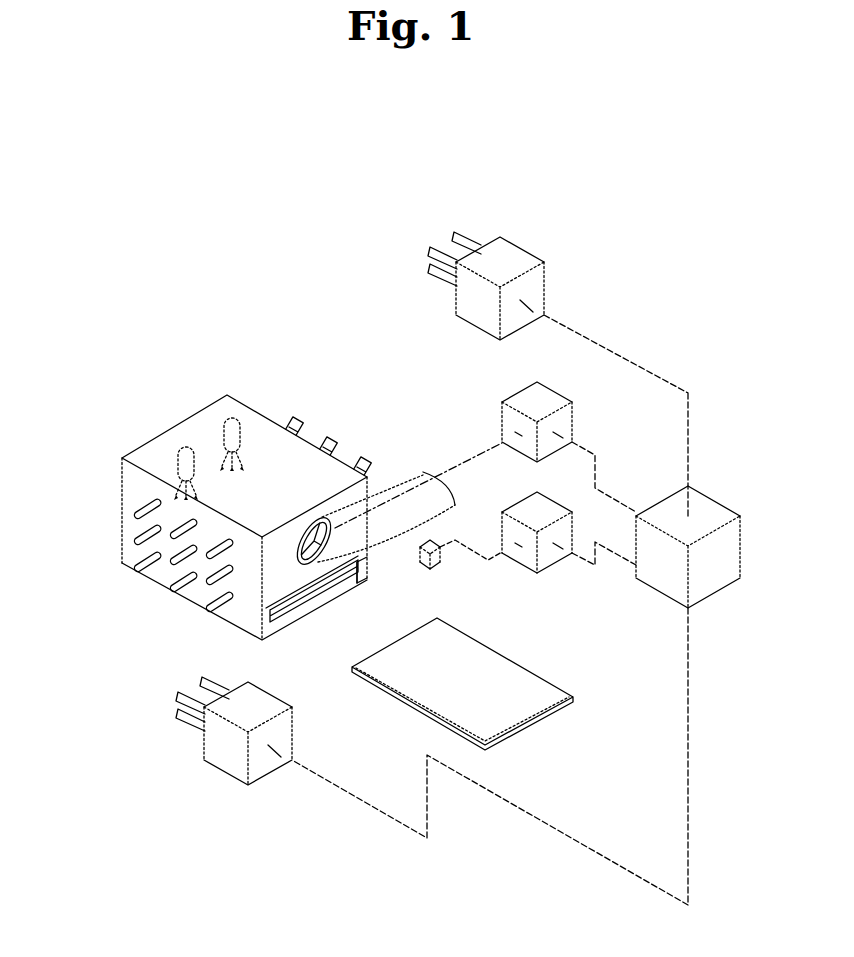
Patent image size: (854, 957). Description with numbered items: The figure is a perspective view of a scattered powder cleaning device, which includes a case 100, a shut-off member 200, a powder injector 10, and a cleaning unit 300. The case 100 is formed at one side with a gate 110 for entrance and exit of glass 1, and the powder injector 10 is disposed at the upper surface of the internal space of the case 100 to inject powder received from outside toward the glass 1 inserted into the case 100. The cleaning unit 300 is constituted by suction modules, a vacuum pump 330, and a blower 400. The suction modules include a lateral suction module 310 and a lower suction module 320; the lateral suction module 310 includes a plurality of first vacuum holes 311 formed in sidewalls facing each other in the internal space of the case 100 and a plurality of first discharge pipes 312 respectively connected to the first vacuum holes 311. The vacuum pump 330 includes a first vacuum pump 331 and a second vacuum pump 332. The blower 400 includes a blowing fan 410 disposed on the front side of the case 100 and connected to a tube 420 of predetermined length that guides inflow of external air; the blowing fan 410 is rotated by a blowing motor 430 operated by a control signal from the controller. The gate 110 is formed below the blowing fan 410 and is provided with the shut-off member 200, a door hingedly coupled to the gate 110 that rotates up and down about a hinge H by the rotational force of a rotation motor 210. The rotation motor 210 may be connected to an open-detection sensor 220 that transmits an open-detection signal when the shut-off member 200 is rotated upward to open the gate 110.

The glass 1 is at (515, 715).
The powder injector 10 is at (240, 413).
The case 100 is at (240, 617).
The gate 110 is at (280, 627).
The shut-off member 200 is at (365, 581).
The rotation motor 210 is at (547, 560).
The open-detection sensor 220 is at (440, 562).
The cleaning unit 300 is at (413, 523).
The lateral suction module 310 is at (139, 574).
The first vacuum holes 311 is at (170, 565).
The first discharge pipes 312 is at (140, 578).
The lower suction module 320 is at (270, 656).
The vacuum pump 330 is at (189, 747).
The first vacuum pump 331 is at (512, 255).
The second vacuum pump 332 is at (230, 760).
The blower 400 is at (396, 449).
The blowing fan 410 is at (326, 516).
The tube 420 is at (393, 497).
The blowing motor 430 is at (574, 416).
The hinge H is at (368, 564).